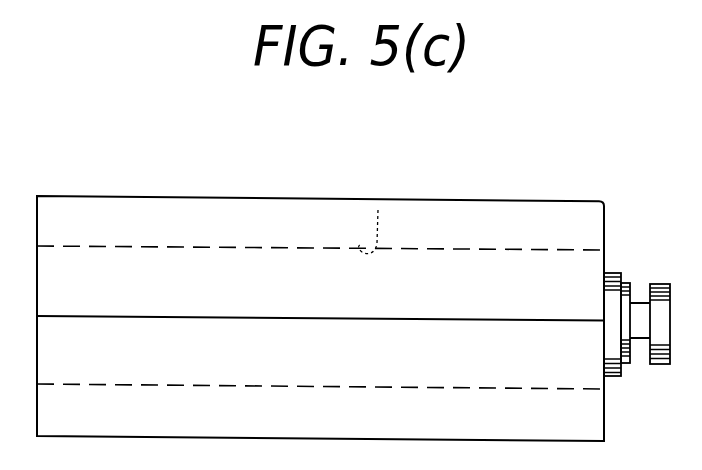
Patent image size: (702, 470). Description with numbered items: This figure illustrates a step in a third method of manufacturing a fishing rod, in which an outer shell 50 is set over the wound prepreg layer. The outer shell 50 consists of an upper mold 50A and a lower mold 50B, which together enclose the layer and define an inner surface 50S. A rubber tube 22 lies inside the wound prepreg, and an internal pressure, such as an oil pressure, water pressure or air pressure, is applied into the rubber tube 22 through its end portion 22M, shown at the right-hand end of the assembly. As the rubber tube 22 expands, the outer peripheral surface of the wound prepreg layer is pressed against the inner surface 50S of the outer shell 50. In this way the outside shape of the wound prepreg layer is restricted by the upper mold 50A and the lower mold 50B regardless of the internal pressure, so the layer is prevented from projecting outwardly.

The outer shell 50 is at (328, 145).
The upper mold 50A is at (300, 225).
The lower mold 50B is at (189, 339).
The inner surface of the outer shell 50S is at (378, 210).
The rubber tube 22 is at (612, 302).
The end portion of the rubber tube 22M is at (633, 296).